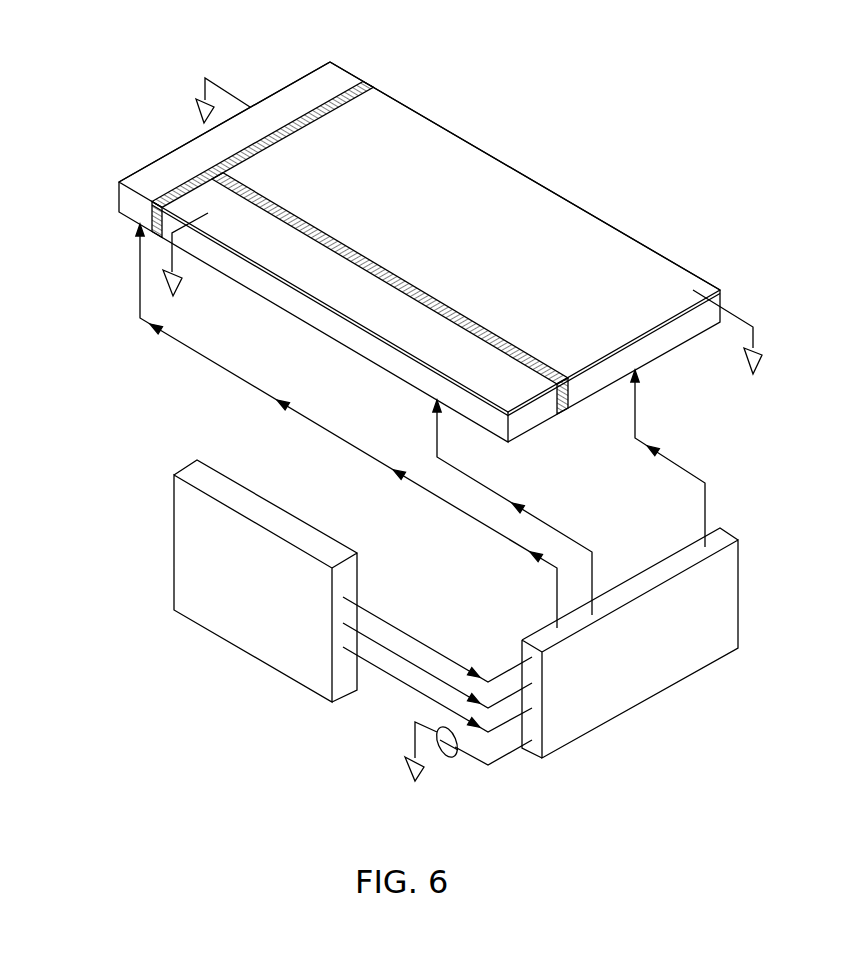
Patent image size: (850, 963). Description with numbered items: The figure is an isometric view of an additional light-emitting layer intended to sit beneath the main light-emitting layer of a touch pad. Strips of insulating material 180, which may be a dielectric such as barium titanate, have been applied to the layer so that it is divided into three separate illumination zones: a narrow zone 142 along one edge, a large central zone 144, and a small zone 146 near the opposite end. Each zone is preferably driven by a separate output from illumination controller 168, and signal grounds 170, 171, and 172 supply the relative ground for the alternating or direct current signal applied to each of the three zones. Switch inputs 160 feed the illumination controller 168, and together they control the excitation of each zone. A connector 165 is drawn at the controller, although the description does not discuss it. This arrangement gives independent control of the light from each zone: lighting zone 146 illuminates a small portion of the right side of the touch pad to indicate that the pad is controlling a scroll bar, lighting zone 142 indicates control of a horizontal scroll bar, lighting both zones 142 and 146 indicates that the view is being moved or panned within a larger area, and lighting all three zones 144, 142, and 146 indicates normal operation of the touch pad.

The illumination zone 142 is at (195, 160).
The illumination zone 144 is at (453, 150).
The illumination zone 146 is at (510, 377).
The insulating material 180 is at (367, 83).
The signal ground 170 is at (758, 352).
The signal ground 171 is at (197, 100).
The signal ground 172 is at (182, 288).
The switch inputs 160 is at (265, 581).
The illumination controller 168 is at (630, 643).
The power connector 165 is at (447, 760).